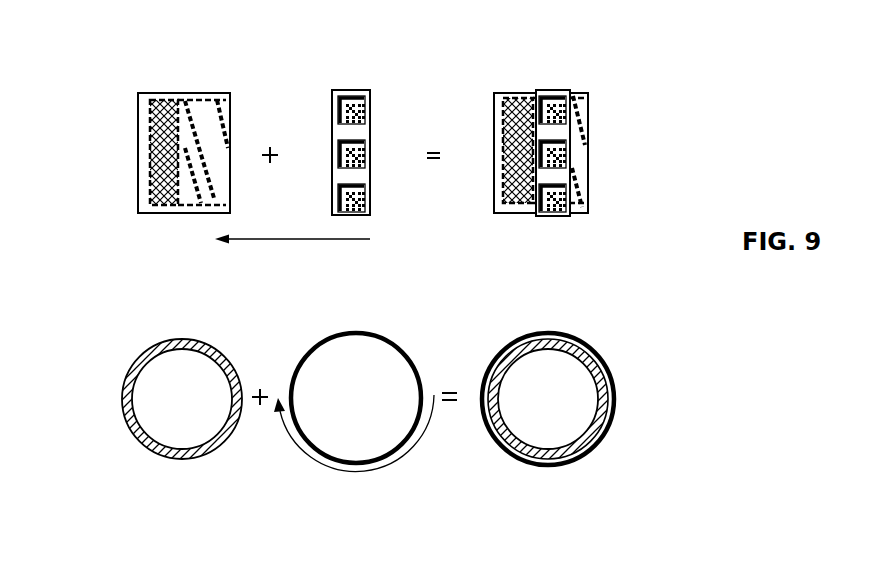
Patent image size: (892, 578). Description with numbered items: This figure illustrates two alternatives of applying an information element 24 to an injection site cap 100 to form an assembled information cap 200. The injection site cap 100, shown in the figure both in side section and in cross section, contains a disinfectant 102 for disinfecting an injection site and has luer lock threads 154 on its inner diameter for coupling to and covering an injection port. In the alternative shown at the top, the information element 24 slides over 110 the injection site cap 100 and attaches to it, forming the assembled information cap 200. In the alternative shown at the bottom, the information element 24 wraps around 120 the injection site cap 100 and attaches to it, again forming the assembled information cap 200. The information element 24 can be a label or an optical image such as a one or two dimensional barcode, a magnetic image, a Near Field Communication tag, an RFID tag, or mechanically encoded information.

The injection site cap 100 is at (147, 357).
The disinfectant 102 is at (88, 60).
The luer lock threads 154 is at (220, 190).
The information element 24 is at (353, 90).
The slide over 110 is at (305, 239).
The wrap around 120 is at (343, 473).
The assembled information cap 200 is at (600, 82).